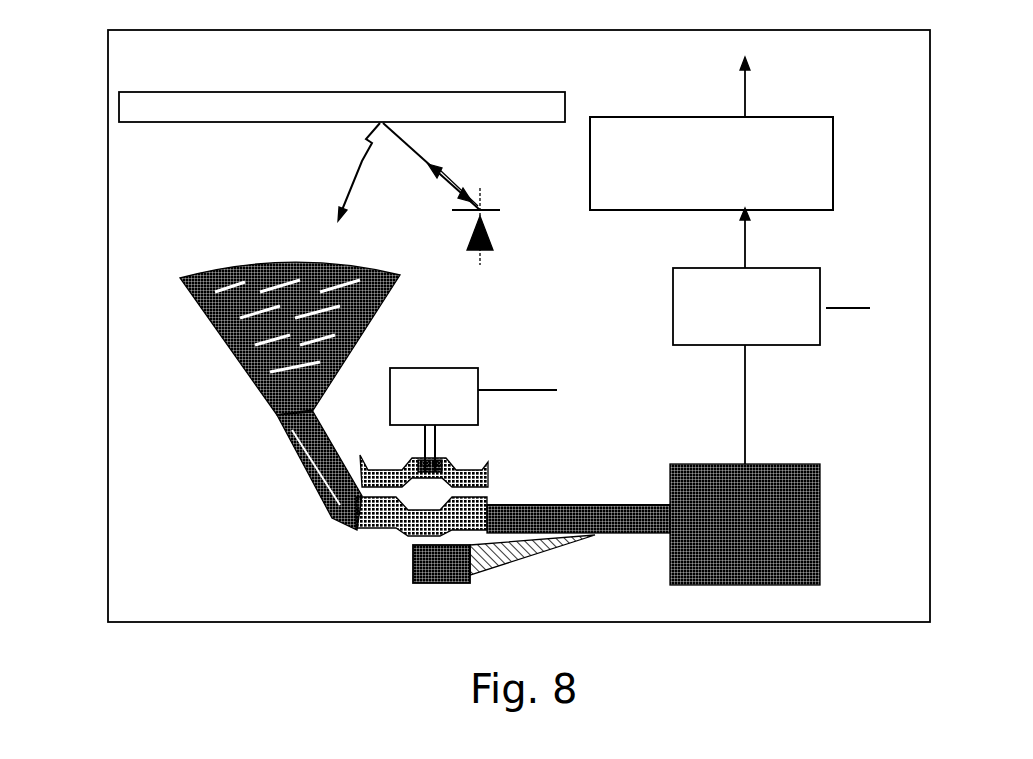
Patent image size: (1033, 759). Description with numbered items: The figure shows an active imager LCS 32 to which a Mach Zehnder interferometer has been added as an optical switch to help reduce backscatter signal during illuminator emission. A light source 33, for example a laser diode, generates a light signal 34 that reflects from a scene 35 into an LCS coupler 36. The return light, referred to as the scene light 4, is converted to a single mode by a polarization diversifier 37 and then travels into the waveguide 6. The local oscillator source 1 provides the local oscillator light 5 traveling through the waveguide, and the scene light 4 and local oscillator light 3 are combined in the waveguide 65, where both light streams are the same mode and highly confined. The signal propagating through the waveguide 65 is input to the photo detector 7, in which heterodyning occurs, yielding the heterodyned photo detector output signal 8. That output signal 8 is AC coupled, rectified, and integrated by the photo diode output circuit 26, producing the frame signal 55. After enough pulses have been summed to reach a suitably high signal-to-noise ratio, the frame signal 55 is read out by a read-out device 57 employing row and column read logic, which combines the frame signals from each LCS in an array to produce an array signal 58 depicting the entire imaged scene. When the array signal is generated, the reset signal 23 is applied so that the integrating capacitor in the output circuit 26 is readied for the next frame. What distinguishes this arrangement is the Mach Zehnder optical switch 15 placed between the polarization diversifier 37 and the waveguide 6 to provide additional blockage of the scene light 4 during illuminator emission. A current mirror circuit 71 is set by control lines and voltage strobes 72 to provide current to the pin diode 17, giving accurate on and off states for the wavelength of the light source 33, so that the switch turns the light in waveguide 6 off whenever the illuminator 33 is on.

The local oscillator source 1 is at (413, 565).
The local oscillator light 3 is at (503, 565).
The scene light 4 is at (345, 181).
The local oscillator light 5 is at (548, 552).
The waveguide 6 is at (548, 506).
The photo detector 7 is at (670, 576).
The photo detector output signal 8 is at (745, 428).
The Mach Zehnder optical switch 15 is at (390, 467).
The pin diode 17 is at (437, 463).
The reset signal 23 is at (845, 310).
The photo diode output circuit 26 is at (673, 306).
The active imager LCS 32 is at (108, 212).
The light source 33 is at (494, 213).
The light signal 34 is at (418, 158).
The scene 35 is at (258, 123).
The LCS coupler 36 is at (222, 359).
The polarization diversifier 37 is at (296, 468).
The frame signal 55 is at (745, 232).
The read-out device 57 is at (772, 212).
The array signal 58 is at (748, 83).
The waveguide 65 is at (648, 505).
The current mirror circuit 71 is at (445, 368).
The control lines and voltage strobes 72 is at (519, 390).